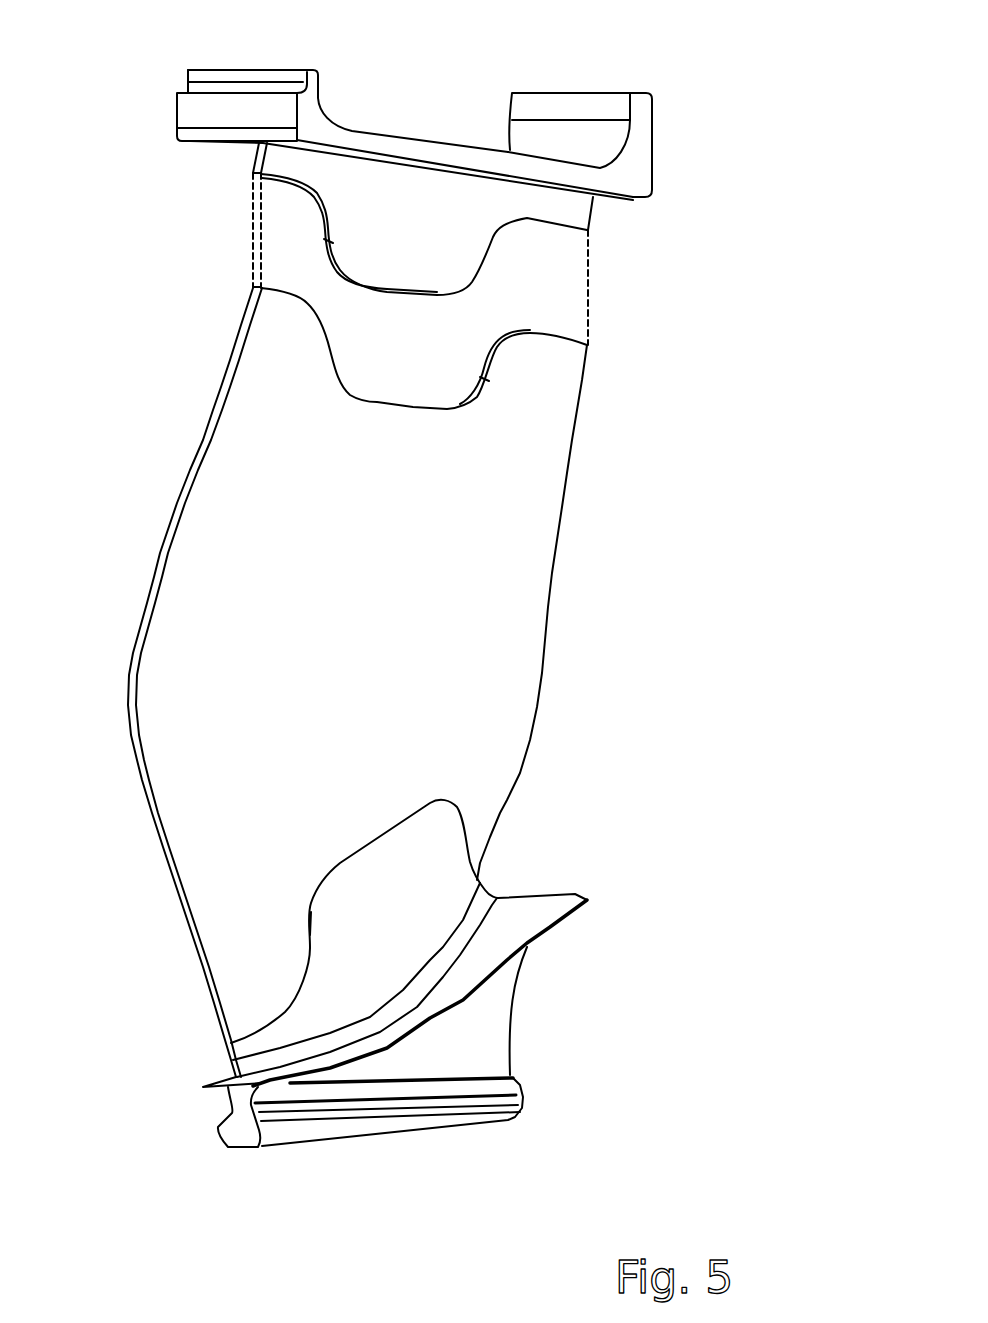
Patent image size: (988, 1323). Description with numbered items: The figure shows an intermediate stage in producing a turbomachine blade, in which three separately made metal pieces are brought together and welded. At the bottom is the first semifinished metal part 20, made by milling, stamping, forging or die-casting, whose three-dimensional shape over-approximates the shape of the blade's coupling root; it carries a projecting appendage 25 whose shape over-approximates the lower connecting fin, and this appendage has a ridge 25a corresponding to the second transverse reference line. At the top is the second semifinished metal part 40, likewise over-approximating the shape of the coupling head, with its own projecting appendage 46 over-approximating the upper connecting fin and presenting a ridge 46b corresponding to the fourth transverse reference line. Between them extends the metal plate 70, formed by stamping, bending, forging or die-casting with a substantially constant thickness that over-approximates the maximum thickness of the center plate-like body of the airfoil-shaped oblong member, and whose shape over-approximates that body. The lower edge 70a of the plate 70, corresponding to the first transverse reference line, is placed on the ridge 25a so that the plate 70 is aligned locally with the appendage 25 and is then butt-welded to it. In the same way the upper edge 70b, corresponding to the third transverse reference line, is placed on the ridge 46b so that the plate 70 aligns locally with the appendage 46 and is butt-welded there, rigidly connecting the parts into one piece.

The first semifinished metal part 20 is at (243, 1128).
The projecting appendage 25 is at (410, 880).
The ridge 25a is at (299, 918).
The second semifinished metal part 40 is at (386, 135).
The projecting appendage 46 is at (452, 251).
The ridge 46b is at (326, 272).
The metal plate 70 is at (173, 710).
The lower edge 70a is at (346, 871).
The upper edge 70b is at (424, 394).